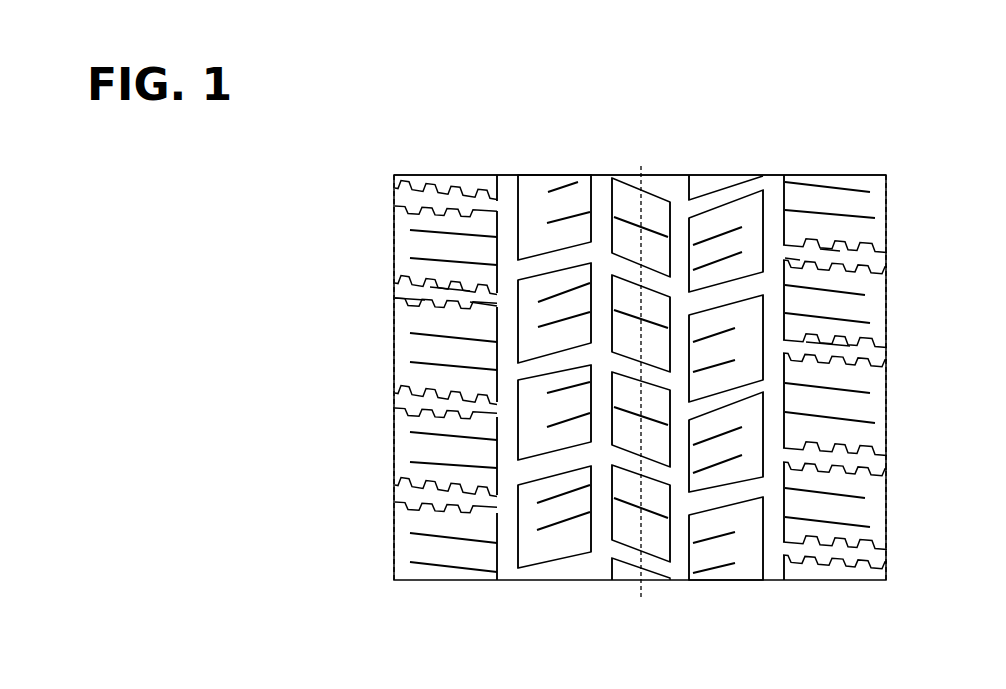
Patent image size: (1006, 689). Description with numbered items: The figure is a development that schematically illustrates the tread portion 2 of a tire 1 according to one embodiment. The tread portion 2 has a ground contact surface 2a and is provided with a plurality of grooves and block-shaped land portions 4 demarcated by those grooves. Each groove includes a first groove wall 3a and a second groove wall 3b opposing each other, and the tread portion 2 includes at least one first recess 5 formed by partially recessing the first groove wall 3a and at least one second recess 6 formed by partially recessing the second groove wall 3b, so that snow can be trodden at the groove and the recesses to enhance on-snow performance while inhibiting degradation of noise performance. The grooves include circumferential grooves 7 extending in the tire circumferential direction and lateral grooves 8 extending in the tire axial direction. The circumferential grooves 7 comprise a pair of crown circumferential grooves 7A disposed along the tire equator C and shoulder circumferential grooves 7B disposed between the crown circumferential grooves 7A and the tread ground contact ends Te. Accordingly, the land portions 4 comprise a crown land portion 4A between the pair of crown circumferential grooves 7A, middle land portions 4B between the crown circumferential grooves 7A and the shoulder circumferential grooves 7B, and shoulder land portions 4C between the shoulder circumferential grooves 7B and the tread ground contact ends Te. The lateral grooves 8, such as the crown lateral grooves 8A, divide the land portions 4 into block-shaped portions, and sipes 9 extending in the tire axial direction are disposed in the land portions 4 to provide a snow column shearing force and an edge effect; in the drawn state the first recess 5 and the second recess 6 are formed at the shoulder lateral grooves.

The tire 1 is at (947, 125).
The tread portion 2 is at (862, 153).
The ground contact surface 2a is at (860, 244).
The first groove wall 3a is at (815, 350).
The second groove wall 3b is at (848, 345).
The land portion 4 is at (787, 620).
The crown land portion 4A is at (653, 535).
The middle land portion 4B is at (568, 530).
The shoulder land portion 4C is at (671, 359).
The first recess 5 is at (810, 352).
The second recess 6 is at (803, 330).
The circumferential groove 7 is at (718, 129).
The crown circumferential groove 7A is at (601, 193).
The shoulder circumferential groove 7B is at (513, 193).
The lateral groove 8 is at (498, 129).
The crown lateral groove 8A is at (507, 300).
The sipe 9 is at (562, 390).
The tread ground contact end Te is at (405, 192).
The tire equator C is at (641, 372).